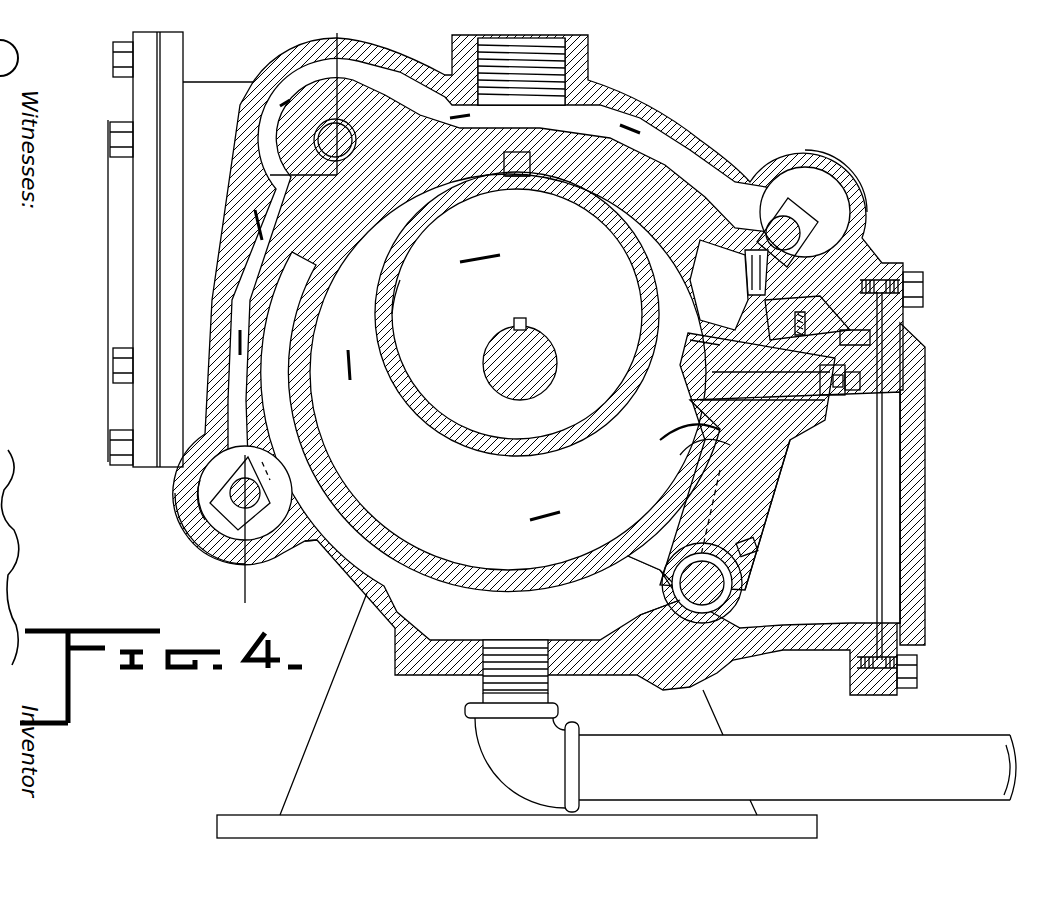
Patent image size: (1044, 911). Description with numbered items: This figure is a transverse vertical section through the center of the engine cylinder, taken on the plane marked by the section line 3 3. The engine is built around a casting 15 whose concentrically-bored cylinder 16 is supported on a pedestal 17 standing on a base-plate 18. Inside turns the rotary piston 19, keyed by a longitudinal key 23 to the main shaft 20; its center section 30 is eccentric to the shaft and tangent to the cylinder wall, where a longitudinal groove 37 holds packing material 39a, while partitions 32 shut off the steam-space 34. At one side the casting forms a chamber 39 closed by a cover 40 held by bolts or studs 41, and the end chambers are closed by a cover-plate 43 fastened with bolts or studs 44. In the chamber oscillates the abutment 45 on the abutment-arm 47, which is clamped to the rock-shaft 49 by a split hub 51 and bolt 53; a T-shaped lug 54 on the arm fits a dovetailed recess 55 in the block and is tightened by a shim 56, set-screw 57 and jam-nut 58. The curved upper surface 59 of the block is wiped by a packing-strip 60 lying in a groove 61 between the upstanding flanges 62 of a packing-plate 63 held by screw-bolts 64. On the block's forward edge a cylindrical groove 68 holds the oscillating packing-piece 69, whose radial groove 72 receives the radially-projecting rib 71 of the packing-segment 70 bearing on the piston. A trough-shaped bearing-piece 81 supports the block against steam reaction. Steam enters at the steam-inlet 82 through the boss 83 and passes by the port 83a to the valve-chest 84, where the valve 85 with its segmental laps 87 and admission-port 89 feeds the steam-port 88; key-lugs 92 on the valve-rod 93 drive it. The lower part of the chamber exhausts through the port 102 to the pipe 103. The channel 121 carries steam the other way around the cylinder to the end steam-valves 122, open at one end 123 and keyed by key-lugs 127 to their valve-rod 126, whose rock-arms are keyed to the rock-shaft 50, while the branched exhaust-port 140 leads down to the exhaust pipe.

The section line 3 is at (350, 40).
The casting 15 is at (415, 675).
The cylinder 16 is at (455, 532).
The pedestal 17 is at (325, 745).
The base-plate 18 is at (388, 815).
The rotary piston 19 is at (460, 440).
The main shaft 20 is at (540, 335).
The longitudinal key 23 is at (520, 318).
The center section 30 is at (395, 325).
The partition 32 is at (330, 555).
The steam-space 34 is at (546, 533).
The longitudinal groove 37 is at (508, 178).
The chamber 39 is at (764, 510).
The packing material 39a is at (525, 178).
The cover 40 is at (927, 472).
The bolts or studs 41 is at (948, 685).
The cover-plate 43 is at (150, 222).
The bolts or studs 44 is at (110, 455).
The abutment 45 is at (835, 392).
The abutment-arm 47 is at (770, 480).
The rock-shaft 49 is at (745, 585).
The rock-shaft 50 is at (300, 85).
The split hub 51 is at (700, 560).
The bolt 53 is at (758, 550).
The T-shaped lug 54 is at (690, 446).
The dovetailed recess 55 is at (838, 395).
The shim 56 is at (805, 400).
The set-screw 57 is at (862, 382).
The jam-nut 58 is at (847, 380).
The upper surface 59 is at (830, 335).
The packing-strip 60 is at (700, 322).
The groove 61 is at (892, 265).
The upstanding flange 62 is at (922, 320).
The packing-plate 63 is at (810, 330).
The screw-bolt 64 is at (873, 338).
The cylindrical groove 68 is at (688, 417).
The oscillating packing-piece 69 is at (672, 452).
The packing-segment 70 is at (690, 372).
The radially-projecting rib 71 is at (690, 340).
The radial groove 72 is at (646, 407).
The trough-shaped bearing-piece 81 is at (735, 640).
The steam-inlet 82 is at (665, 645).
The boss 83 is at (590, 62).
The port 83a is at (652, 140).
The valve-chest 84 is at (830, 178).
The valve 85 is at (840, 230).
The segmental lap 87 is at (840, 255).
The steam-port 88 is at (700, 268).
The admission-port 89 is at (860, 185).
The key-lug 92 is at (785, 215).
The valve-rod 93 is at (810, 200).
The port 102 is at (640, 640).
The pipe 103 is at (870, 785).
The steam port or channel 121 is at (238, 292).
The steam-valve 122 is at (185, 545).
The open end 123 is at (262, 525).
The valve-rod 126 is at (190, 520).
The key-lug 127 is at (215, 540).
The exhaust-port 140 is at (395, 568).